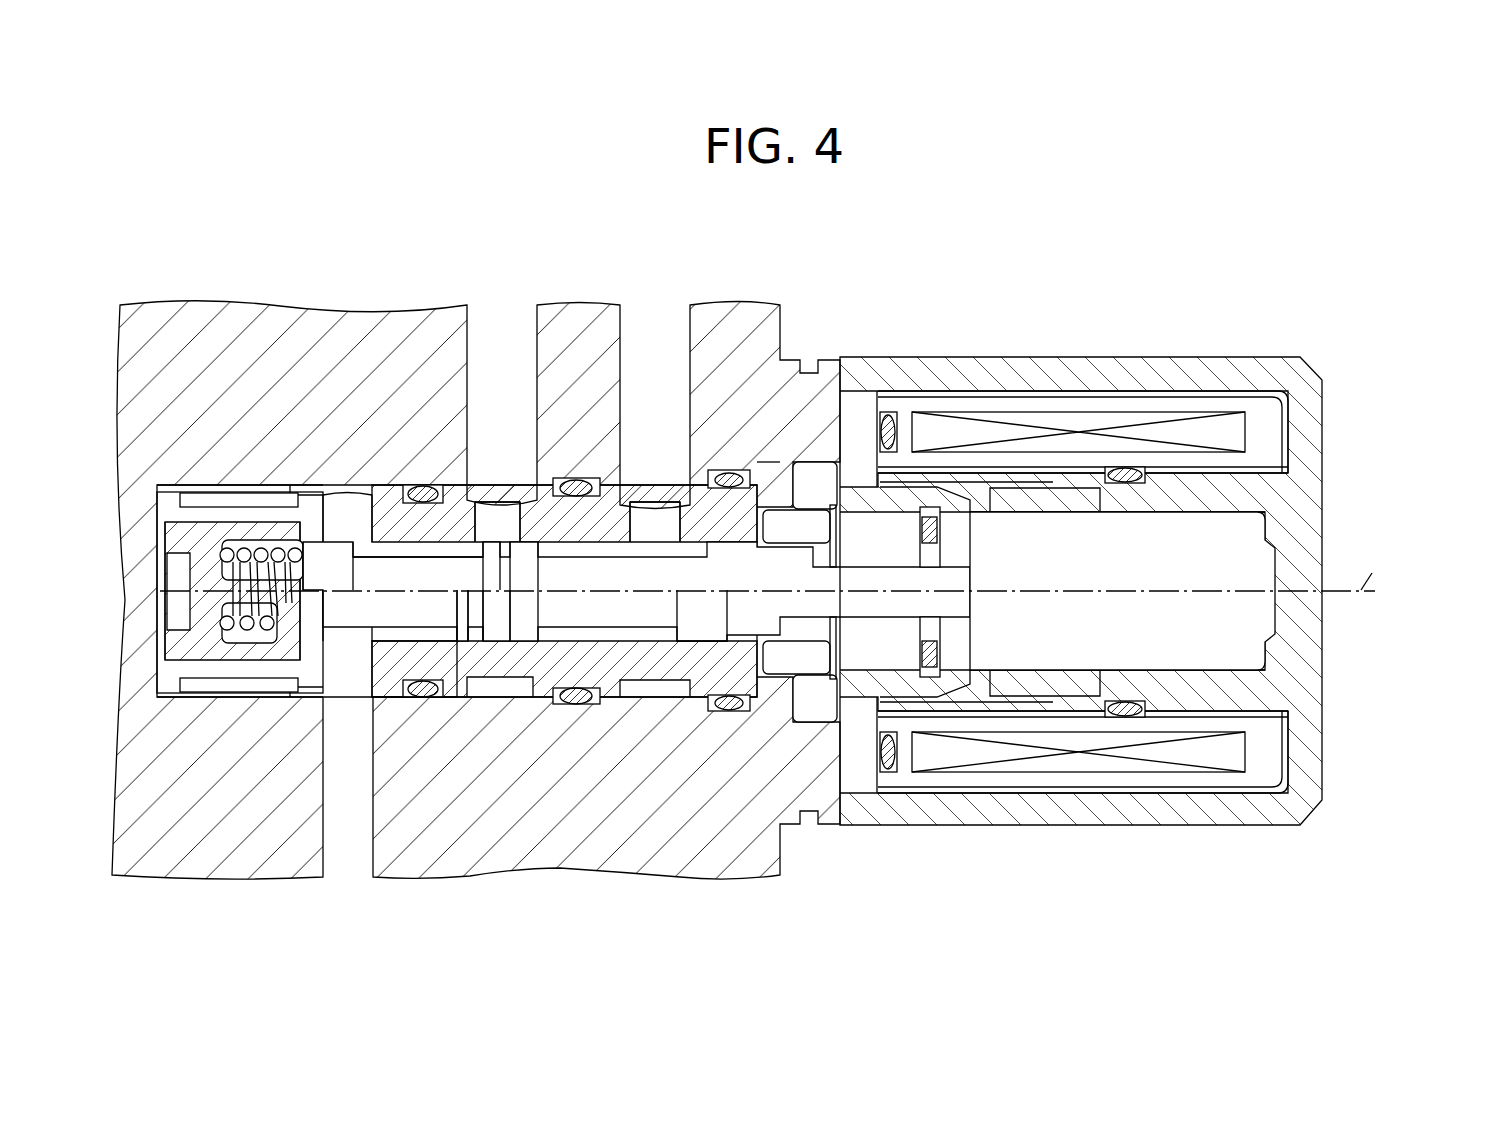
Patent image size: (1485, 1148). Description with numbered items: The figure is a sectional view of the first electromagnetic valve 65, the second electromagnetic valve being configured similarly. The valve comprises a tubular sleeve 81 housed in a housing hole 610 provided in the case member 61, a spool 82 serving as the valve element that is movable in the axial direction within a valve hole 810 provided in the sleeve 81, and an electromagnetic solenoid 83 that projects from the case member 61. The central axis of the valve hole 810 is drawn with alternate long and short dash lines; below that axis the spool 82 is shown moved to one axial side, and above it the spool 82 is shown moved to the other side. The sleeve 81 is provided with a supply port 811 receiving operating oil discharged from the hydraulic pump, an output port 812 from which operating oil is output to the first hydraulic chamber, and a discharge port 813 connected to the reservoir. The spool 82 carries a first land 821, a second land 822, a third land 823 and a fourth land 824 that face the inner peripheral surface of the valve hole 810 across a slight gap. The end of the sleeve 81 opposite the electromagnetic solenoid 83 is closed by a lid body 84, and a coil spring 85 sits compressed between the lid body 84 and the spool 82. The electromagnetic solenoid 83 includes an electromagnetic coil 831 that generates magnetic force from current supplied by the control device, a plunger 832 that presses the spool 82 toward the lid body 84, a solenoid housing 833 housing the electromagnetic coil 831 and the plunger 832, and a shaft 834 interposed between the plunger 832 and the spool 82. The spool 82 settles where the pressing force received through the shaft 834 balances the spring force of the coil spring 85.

The case member 61 is at (722, 330).
The housing hole 610 is at (205, 495).
The first electromagnetic valve 65 is at (1396, 383).
The sleeve 81 is at (393, 482).
The valve hole 810 is at (443, 548).
The supply port 811 is at (643, 517).
The output port 812 is at (497, 546).
The discharge port 813 is at (350, 668).
The spool 82 is at (372, 565).
The first land 821 is at (697, 622).
The second land 822 is at (495, 625).
The third land 823 is at (462, 622).
The fourth land 824 is at (312, 622).
The electromagnetic solenoid 83 is at (1272, 336).
The electromagnetic coil 831 is at (1080, 420).
The plunger 832 is at (1235, 546).
The solenoid housing 833 is at (985, 372).
The shaft 834 is at (845, 560).
The lid body 84 is at (213, 650).
The coil spring 85 is at (247, 634).